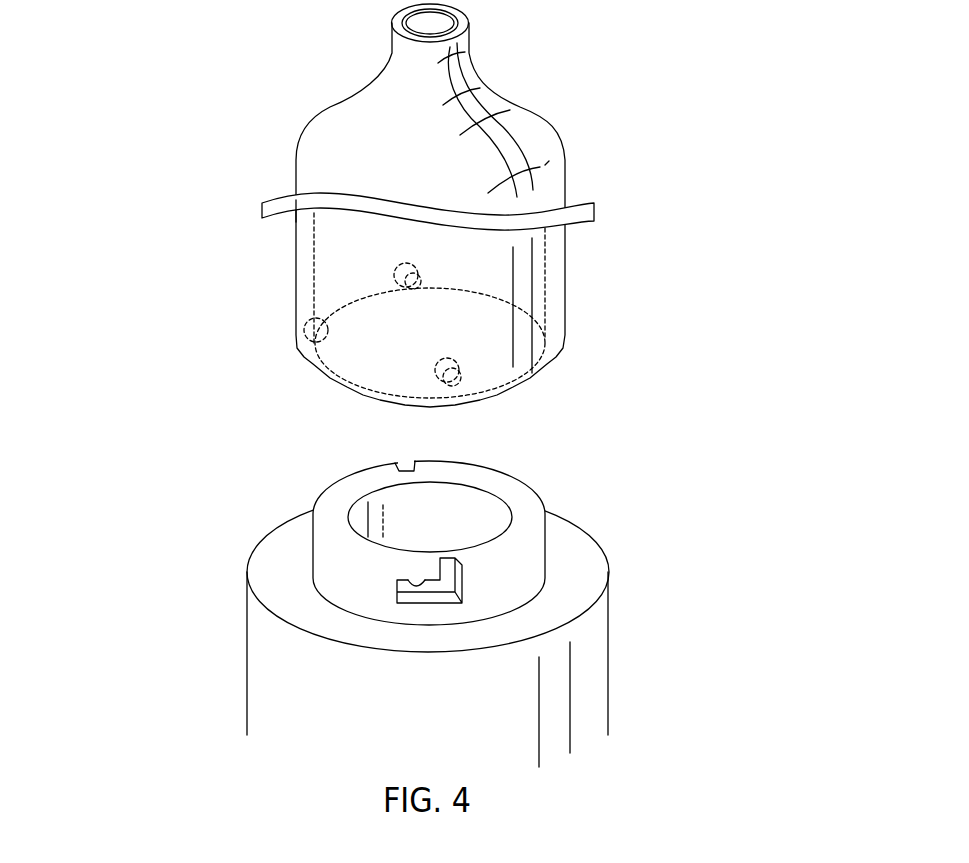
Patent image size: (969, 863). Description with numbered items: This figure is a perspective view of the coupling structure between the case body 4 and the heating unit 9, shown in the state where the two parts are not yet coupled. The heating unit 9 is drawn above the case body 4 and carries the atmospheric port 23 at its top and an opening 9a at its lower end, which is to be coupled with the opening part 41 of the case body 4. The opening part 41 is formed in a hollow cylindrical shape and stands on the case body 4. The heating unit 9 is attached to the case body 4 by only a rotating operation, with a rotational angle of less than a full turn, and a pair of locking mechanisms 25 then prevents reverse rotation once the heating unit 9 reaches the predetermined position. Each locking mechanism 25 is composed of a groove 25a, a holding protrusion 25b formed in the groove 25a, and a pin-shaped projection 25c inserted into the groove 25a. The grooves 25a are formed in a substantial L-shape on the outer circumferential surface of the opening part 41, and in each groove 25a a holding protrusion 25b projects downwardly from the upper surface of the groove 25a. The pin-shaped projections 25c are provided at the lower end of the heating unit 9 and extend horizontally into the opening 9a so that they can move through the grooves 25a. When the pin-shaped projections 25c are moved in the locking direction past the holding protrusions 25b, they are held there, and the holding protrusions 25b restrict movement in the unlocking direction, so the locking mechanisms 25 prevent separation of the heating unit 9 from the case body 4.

The case body 4 is at (293, 670).
The heating unit 9 is at (582, 264).
The opening 9a is at (312, 350).
The atmospheric port 23 is at (412, 56).
The locking mechanism 25 is at (183, 408).
The groove 25a is at (447, 587).
The holding protrusion 25b is at (413, 586).
The pin-shaped projection 25c is at (407, 284).
The opening part 41 is at (492, 521).